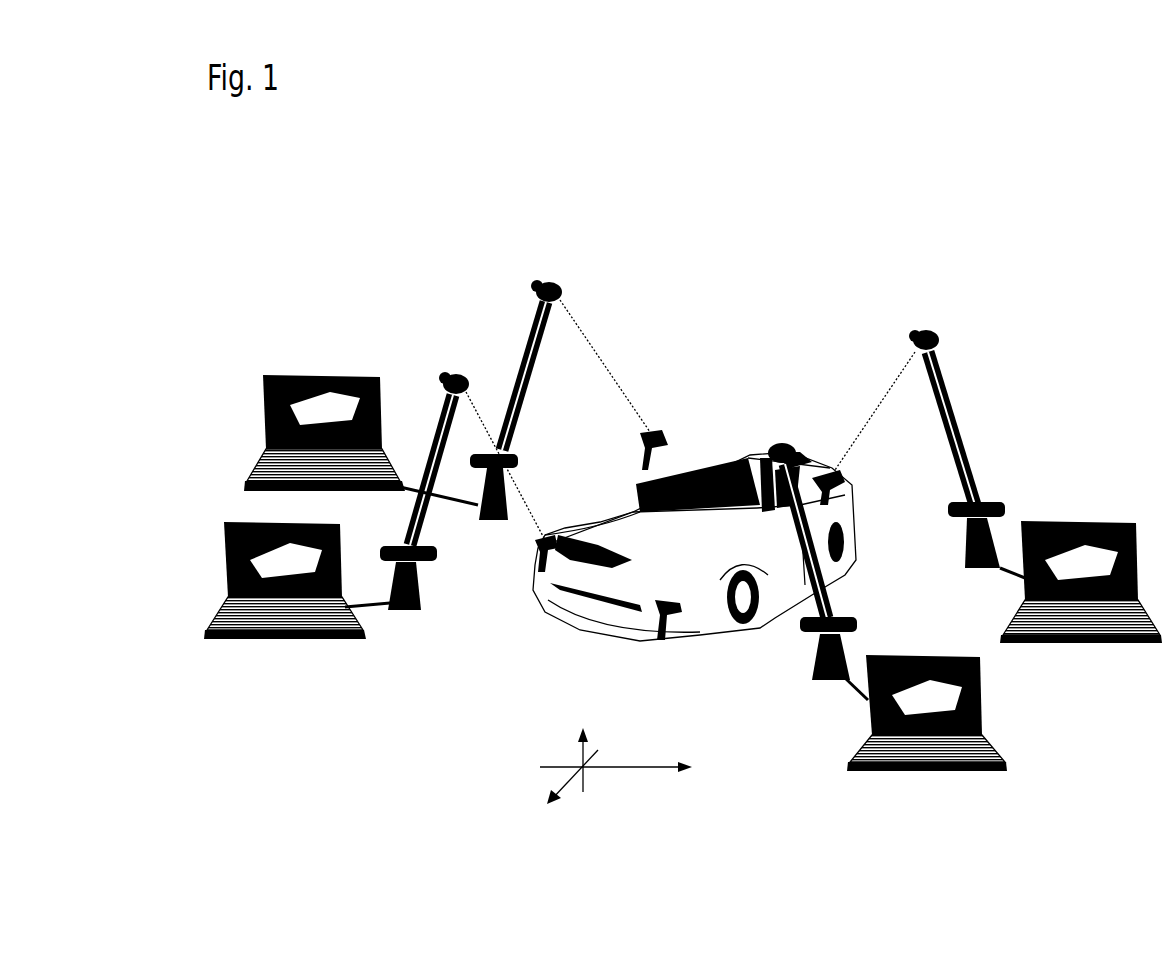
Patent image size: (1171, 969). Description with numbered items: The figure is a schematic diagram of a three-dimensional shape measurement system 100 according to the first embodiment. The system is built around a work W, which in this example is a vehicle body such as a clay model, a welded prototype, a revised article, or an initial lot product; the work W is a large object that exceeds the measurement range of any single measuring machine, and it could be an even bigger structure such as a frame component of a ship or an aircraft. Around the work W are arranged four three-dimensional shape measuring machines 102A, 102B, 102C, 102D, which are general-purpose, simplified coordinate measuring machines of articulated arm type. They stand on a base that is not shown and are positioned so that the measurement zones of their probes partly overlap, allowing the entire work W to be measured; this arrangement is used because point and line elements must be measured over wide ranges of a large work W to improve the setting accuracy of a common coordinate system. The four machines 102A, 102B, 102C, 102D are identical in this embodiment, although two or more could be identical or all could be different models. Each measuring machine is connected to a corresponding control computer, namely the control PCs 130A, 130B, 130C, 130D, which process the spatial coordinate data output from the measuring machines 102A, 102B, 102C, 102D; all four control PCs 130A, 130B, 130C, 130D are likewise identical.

The three-dimensional shape measurement system 100 is at (808, 286).
The work W is at (732, 438).
The three-dimensional shape measuring machine 102A is at (613, 346).
The three-dimensional shape measuring machine 102B is at (527, 448).
The three-dimensional shape measuring machine 102C is at (955, 323).
The three-dimensional shape measuring machine 102D is at (826, 578).
The control computer 130A is at (316, 364).
The control computer 130B is at (380, 622).
The control computer 130C is at (1055, 507).
The control computer 130D is at (892, 640).